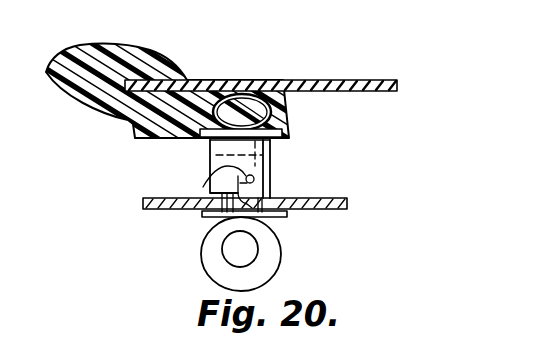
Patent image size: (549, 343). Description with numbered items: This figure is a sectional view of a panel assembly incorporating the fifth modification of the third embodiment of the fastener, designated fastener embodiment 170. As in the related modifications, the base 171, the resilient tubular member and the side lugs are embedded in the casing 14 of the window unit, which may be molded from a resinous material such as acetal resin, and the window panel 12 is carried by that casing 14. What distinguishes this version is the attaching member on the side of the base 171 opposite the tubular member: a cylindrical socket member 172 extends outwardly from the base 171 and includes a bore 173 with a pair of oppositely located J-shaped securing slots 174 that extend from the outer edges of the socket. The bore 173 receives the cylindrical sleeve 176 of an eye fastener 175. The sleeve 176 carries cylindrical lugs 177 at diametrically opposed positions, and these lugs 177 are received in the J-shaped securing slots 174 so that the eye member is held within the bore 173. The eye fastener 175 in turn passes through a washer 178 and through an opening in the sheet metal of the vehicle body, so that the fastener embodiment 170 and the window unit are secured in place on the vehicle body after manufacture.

The plate 12 is at (360, 83).
The casing 14 is at (117, 61).
The fastener embodiment 170 is at (286, 199).
The base 171 is at (281, 136).
The cylindrical socket member 172 is at (217, 143).
The bore 173 is at (276, 172).
The J-shaped securing slots 174 is at (268, 201).
The eye fastener 175 is at (263, 268).
The cylindrical sleeve 176 is at (282, 215).
The cylindrical lugs 177 is at (208, 185).
The washer 178 is at (203, 217).